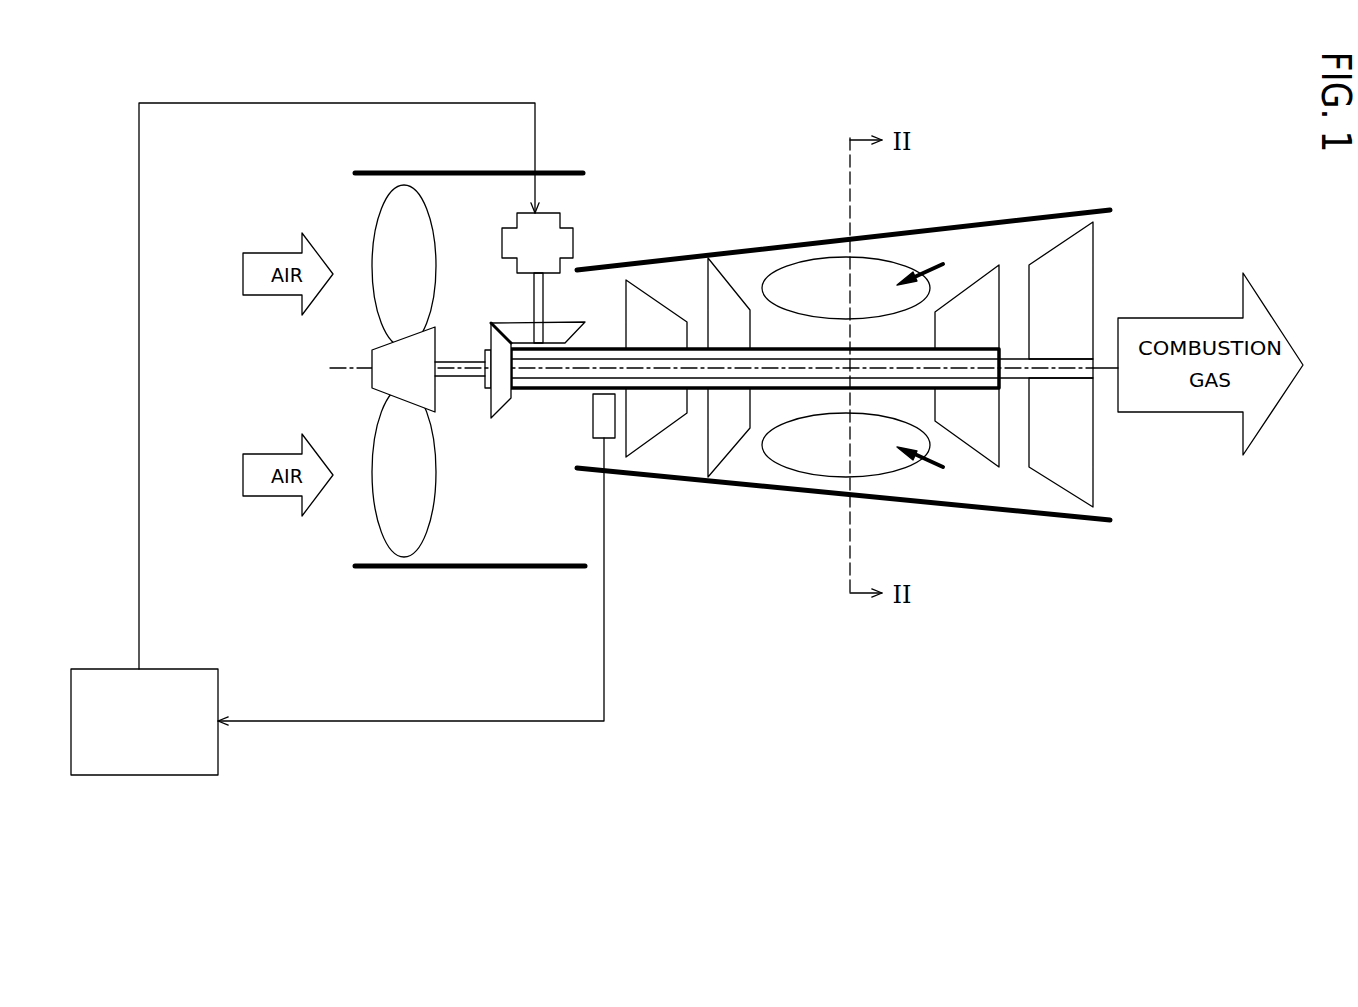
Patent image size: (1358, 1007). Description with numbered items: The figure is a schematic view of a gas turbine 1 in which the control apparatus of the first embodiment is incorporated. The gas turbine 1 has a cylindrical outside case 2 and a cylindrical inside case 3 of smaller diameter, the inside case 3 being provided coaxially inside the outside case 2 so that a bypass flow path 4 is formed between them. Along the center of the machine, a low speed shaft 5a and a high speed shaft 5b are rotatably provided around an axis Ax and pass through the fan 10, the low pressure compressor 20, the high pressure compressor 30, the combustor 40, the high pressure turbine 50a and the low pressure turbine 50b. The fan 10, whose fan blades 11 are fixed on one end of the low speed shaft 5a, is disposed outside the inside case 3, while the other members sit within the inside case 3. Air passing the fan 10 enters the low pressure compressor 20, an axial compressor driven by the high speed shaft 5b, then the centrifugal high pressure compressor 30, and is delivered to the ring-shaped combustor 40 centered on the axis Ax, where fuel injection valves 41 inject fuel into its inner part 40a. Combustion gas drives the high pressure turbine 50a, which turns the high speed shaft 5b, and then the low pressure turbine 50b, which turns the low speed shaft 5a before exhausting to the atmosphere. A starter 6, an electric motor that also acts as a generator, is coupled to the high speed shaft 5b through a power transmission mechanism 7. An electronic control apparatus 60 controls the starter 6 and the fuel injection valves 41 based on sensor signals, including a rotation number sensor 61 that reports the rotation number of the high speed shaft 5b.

The gas turbine 1 is at (784, 448).
The outside case 2 is at (466, 569).
The inside case 3 is at (747, 252).
The bypass flow path 4 is at (566, 233).
The low speed shaft 5a is at (540, 388).
The high speed shaft 5b is at (697, 343).
The starter 6 is at (512, 226).
The power transmission mechanism 7 is at (500, 311).
The fan 10 is at (384, 398).
The fan blades 11 is at (387, 233).
The low pressure compressor 20 is at (666, 446).
The high pressure compressor 30 is at (740, 448).
The combustor 40 is at (842, 395).
The inner part 40a is at (821, 287).
The fuel injection valves 41 is at (931, 265).
The high pressure turbine 50a is at (968, 286).
The low pressure turbine 50b is at (1052, 244).
The electronic control apparatus 60 is at (105, 669).
The rotation number sensor 61 is at (592, 424).
The axis Ax is at (338, 369).